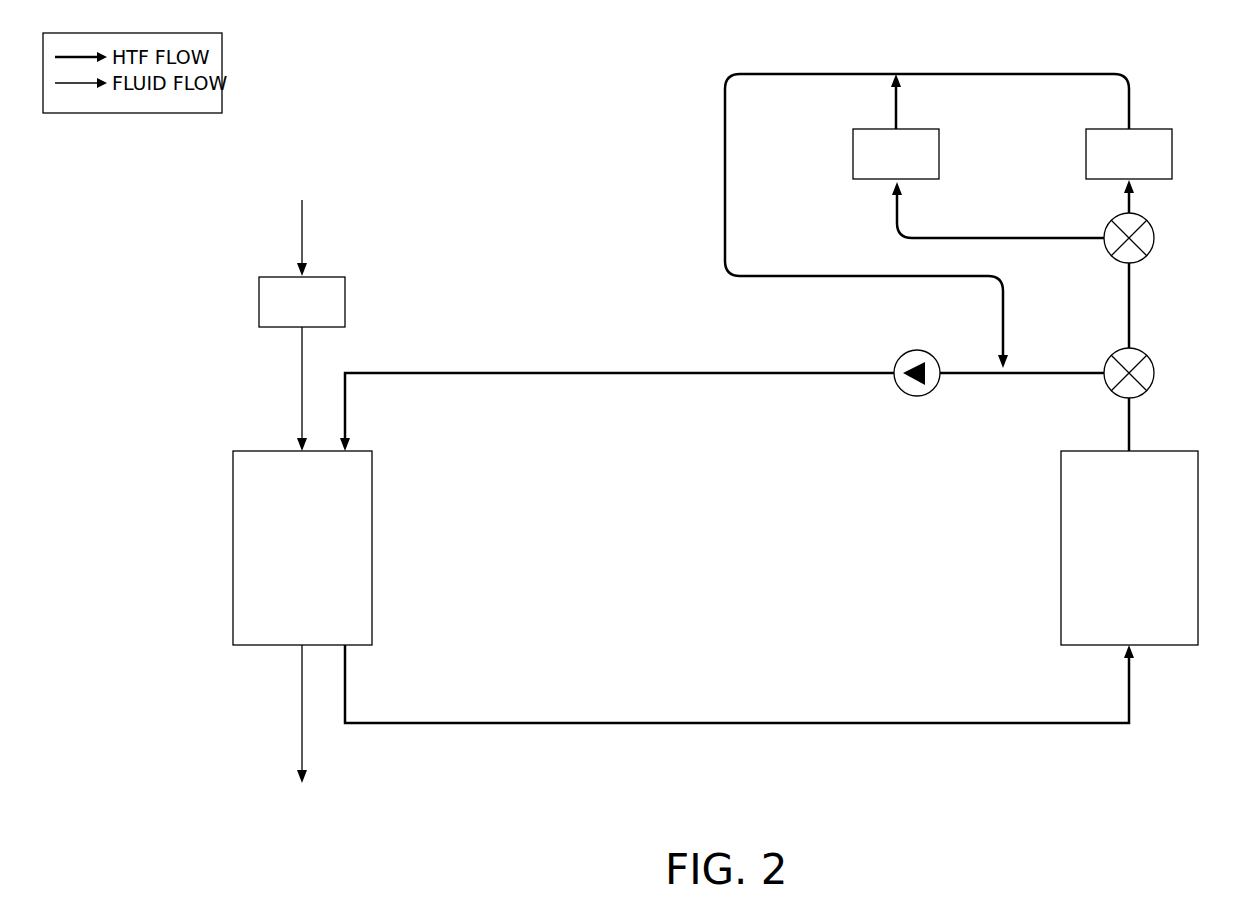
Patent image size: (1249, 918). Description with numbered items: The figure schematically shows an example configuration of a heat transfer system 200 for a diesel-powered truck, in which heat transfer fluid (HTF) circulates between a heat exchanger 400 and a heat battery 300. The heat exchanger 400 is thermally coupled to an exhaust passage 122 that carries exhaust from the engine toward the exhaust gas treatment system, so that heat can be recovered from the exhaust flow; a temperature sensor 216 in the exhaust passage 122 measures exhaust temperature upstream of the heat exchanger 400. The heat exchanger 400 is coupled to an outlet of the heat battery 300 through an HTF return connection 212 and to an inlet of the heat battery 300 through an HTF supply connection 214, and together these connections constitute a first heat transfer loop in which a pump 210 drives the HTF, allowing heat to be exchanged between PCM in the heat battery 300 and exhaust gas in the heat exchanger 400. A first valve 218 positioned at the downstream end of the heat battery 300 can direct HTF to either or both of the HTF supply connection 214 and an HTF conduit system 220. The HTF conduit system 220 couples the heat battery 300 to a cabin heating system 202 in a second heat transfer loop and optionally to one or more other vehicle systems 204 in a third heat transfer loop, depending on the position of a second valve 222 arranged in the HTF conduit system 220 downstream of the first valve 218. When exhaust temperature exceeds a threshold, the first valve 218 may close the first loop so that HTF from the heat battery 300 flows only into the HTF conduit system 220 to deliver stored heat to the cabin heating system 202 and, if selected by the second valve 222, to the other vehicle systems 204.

The exhaust passage 122 is at (296, 237).
The temperature sensor 216 is at (302, 302).
The heat exchanger 400 is at (302, 548).
The heat battery 300 is at (1129, 548).
The HTF supply connection 214 is at (615, 380).
The HTF return connection 212 is at (614, 729).
The pump 210 is at (916, 397).
The first valve 218 is at (1155, 372).
The second valve 222 is at (1155, 243).
The cabin heating system 202 is at (1129, 154).
The other vehicle systems 204 is at (896, 126).
The HTF conduit system 220 is at (679, 159).
The heat transfer system 200 is at (1072, 800).